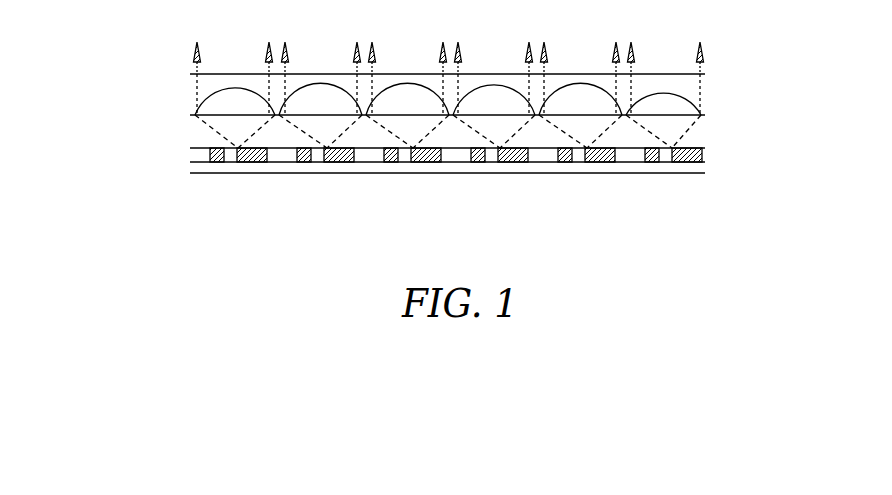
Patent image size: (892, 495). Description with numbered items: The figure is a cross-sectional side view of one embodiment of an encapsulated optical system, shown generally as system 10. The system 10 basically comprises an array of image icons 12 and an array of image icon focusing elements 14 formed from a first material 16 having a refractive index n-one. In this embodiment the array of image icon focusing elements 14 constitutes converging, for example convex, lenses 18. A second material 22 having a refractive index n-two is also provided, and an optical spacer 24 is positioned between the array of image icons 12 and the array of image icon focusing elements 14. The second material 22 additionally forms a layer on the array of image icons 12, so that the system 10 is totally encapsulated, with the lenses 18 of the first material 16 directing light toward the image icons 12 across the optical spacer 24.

The system 10 is at (134, 103).
The array of image icons 12 is at (715, 154).
The array of image icon focusing elements 14 is at (712, 96).
The first material 16 is at (236, 92).
The converging lenses 18 is at (585, 80).
The second material 22 is at (281, 84).
The optical spacer 24 is at (205, 131).